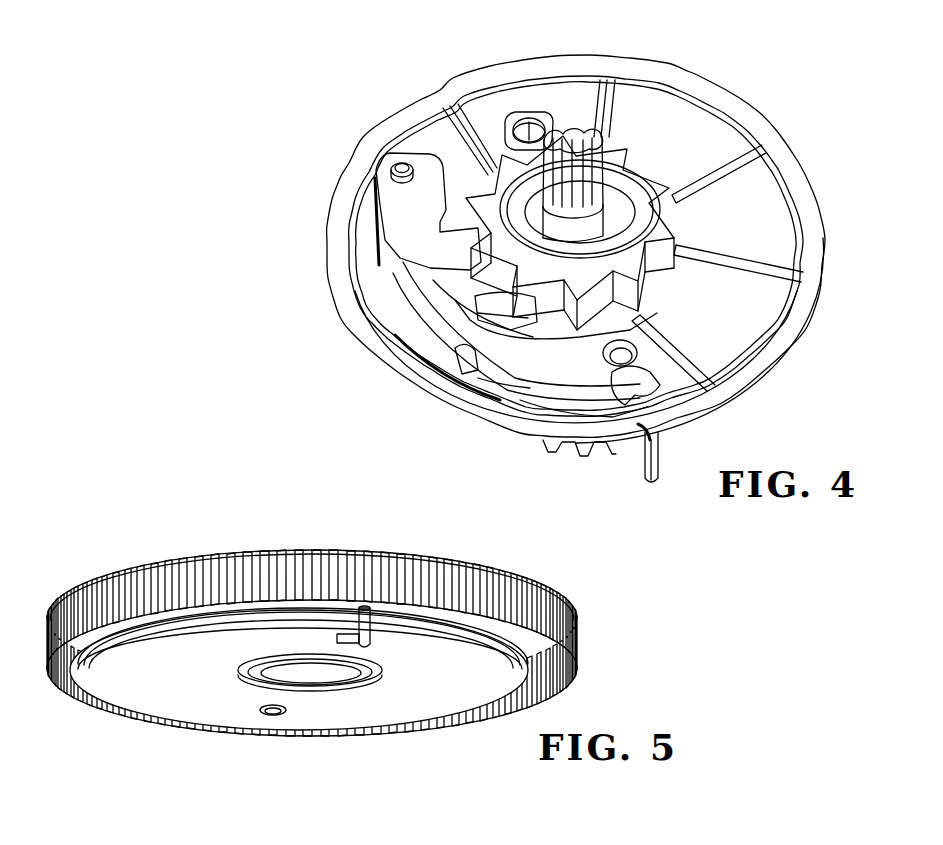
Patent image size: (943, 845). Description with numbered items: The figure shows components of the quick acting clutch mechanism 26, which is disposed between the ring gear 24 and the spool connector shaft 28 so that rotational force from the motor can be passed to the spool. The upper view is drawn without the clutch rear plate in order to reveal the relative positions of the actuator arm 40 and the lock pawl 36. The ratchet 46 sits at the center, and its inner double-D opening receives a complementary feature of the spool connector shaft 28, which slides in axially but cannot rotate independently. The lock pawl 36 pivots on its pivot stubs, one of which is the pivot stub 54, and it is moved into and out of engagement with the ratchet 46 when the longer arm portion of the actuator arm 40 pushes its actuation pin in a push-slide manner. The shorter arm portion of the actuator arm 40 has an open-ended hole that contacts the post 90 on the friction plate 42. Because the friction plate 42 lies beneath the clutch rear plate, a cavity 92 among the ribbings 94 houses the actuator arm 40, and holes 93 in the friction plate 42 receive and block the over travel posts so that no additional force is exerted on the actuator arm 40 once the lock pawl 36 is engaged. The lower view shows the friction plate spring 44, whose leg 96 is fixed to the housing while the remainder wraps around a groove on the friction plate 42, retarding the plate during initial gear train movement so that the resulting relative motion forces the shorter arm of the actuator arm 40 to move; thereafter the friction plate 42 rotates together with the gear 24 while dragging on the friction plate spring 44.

In FIG. 5, the ring gear 24 is at (185, 585).
In FIG. 5, the clutch mechanism 26 is at (478, 683).
In FIG. 4, the spool connector shaft 28 is at (612, 141).
In FIG. 4, the lock pawl 36 is at (412, 238).
In FIG. 4, the actuator arm 40 is at (442, 347).
In FIG. 4, the friction plate 42 is at (780, 127).
In FIG. 5, the friction plate 42 is at (143, 672).
In FIG. 5, the friction plate spring 44 is at (248, 625).
In FIG. 4, the ratchet 46 is at (660, 198).
In FIG. 4, the pivot stub 54 is at (378, 182).
In FIG. 4, the post 90 is at (636, 387).
In FIG. 4, the cavity 92 is at (465, 364).
In FIG. 4, the holes 93 is at (530, 128).
In FIG. 4, the ribbings 94 is at (510, 312).
In FIG. 4, the leg 96 is at (650, 462).
In FIG. 5, the leg 96 is at (370, 635).